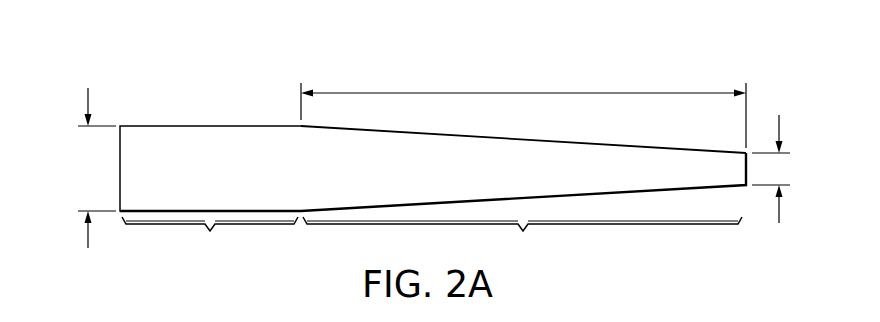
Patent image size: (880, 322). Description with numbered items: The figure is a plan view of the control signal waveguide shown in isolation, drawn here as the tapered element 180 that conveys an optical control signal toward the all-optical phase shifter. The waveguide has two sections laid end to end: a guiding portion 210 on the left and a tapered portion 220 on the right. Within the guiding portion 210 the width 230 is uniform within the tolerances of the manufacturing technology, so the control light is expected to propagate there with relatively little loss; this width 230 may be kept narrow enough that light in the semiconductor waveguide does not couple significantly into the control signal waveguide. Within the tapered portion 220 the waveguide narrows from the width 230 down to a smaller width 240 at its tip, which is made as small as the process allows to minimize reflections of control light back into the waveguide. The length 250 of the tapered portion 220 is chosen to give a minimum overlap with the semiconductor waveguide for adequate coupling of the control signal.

The tapered fiber / waveguide body 180 is at (433, 134).
The guiding portion 210 is at (210, 194).
The tapered portion 220 is at (523, 195).
The width 230 is at (88, 100).
The width 240 is at (779, 211).
The length 250 is at (523, 93).